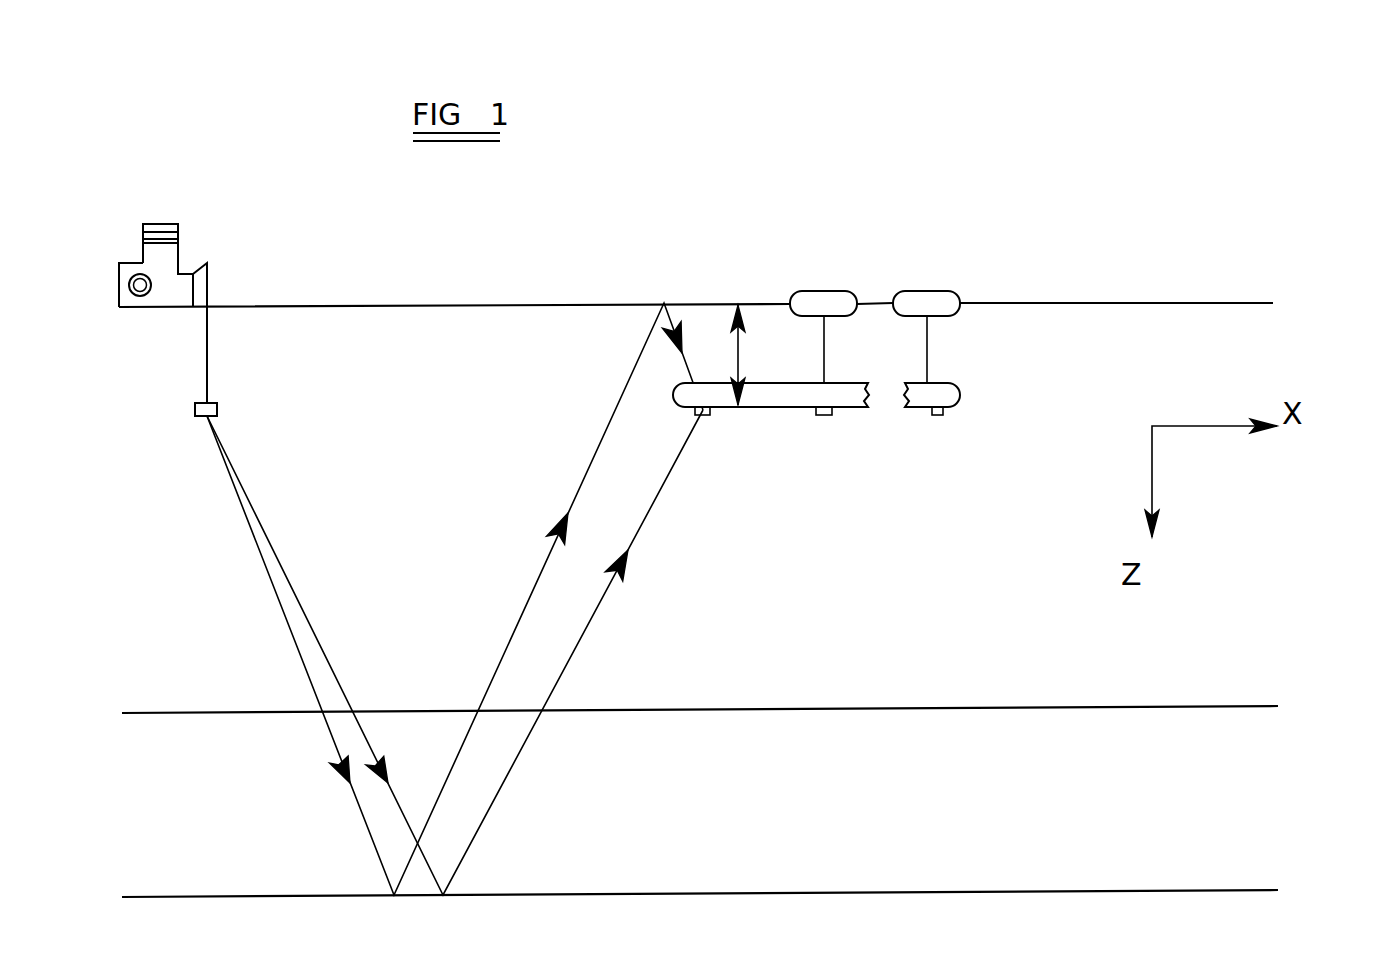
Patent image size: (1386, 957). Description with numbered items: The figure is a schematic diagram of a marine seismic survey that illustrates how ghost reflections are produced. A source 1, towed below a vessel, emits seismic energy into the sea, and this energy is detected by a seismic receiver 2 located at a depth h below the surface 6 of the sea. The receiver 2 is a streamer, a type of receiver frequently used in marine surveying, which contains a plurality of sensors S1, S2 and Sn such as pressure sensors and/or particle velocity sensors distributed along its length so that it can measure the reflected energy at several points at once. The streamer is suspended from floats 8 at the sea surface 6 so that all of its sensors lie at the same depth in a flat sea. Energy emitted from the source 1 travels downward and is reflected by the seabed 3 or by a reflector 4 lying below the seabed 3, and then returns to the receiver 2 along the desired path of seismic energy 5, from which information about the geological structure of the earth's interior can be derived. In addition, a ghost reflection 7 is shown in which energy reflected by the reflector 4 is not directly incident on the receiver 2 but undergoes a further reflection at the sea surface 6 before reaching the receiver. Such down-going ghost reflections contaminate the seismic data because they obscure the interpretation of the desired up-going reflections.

The source 1 is at (195, 410).
The seismic receiver 2 is at (960, 400).
The seabed 3 is at (1278, 706).
The reflector 4 is at (1278, 890).
The path of seismic energy 5 is at (580, 643).
The sea surface 6 is at (1273, 303).
The ghost reflection 7 is at (600, 450).
The float 8 is at (928, 292).
The sensor S1 is at (704, 415).
The sensor S2 is at (826, 415).
The sensor Sn is at (940, 415).
The depth h is at (750, 355).